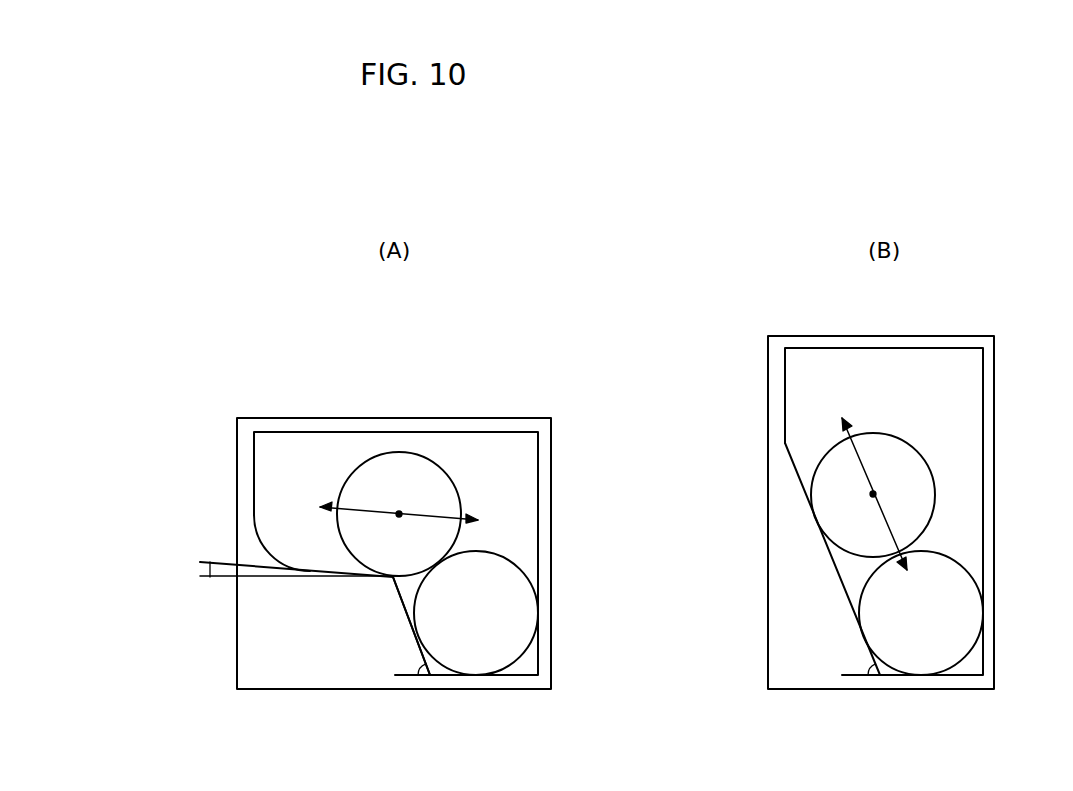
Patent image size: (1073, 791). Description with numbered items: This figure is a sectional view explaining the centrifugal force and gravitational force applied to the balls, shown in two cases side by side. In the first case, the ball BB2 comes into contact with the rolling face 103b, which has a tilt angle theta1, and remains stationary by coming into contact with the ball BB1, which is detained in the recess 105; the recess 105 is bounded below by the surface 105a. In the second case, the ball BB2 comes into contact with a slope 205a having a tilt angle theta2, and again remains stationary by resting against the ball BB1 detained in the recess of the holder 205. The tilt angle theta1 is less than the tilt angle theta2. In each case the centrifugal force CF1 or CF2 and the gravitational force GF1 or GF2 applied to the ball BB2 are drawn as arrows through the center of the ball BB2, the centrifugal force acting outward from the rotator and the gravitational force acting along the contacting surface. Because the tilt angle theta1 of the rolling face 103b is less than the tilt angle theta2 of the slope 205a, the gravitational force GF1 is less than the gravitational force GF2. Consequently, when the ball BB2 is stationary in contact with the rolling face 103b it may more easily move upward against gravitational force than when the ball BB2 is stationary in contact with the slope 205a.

The recess 105 is at (527, 664).
The inclined bottom surface of holding portion 105a is at (431, 676).
The rolling face 103b is at (328, 572).
The holding portion of second embodiment 205 is at (972, 663).
The slope 205a is at (846, 581).
The ball BB1 is at (520, 567).
The ball BB2 is at (452, 481).
The centrifugal force CF1 is at (377, 507).
The gravitational force GF1 is at (497, 523).
The centrifugal force CF2 is at (864, 480).
The gravitational force GF2 is at (917, 580).
The tilt angle theta1 is at (288, 562).
The tilt angle theta2 is at (636, 660).